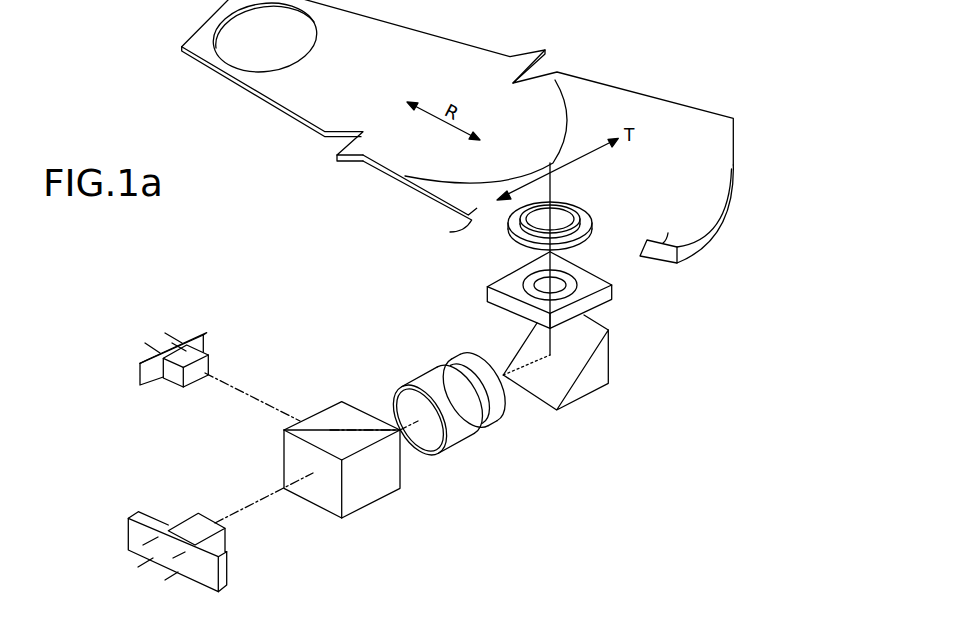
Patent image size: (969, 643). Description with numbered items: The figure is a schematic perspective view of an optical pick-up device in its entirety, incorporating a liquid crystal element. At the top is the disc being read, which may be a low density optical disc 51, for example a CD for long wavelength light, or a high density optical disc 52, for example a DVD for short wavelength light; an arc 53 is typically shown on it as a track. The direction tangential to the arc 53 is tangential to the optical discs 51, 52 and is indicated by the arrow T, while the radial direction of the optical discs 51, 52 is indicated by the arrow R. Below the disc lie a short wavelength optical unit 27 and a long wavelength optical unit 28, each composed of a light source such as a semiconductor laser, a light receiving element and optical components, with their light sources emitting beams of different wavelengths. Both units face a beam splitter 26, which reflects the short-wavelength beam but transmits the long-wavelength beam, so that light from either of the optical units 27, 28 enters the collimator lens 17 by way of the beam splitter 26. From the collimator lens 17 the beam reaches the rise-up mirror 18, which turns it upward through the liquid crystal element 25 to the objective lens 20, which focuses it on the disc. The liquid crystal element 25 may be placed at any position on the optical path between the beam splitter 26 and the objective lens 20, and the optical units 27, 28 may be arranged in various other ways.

The low density optical disc 51 is at (458, 177).
The high density optical disc 52 is at (293, 127).
The arc 53 is at (422, 196).
The objective lens 20 is at (575, 204).
The liquid crystal element 25 is at (487, 287).
The rise-up mirror 18 is at (605, 357).
The collimator lens 17 is at (423, 382).
The beam splitter 26 is at (331, 413).
The short wavelength optical unit 27 is at (200, 333).
The long wavelength optical unit 28 is at (230, 570).